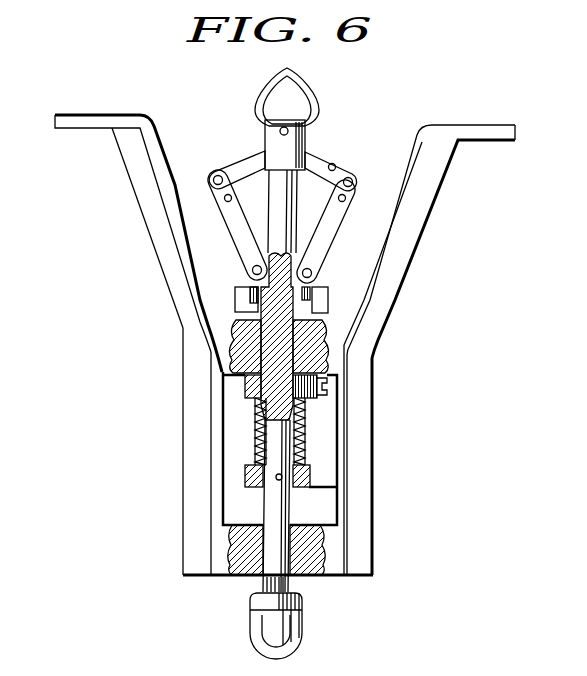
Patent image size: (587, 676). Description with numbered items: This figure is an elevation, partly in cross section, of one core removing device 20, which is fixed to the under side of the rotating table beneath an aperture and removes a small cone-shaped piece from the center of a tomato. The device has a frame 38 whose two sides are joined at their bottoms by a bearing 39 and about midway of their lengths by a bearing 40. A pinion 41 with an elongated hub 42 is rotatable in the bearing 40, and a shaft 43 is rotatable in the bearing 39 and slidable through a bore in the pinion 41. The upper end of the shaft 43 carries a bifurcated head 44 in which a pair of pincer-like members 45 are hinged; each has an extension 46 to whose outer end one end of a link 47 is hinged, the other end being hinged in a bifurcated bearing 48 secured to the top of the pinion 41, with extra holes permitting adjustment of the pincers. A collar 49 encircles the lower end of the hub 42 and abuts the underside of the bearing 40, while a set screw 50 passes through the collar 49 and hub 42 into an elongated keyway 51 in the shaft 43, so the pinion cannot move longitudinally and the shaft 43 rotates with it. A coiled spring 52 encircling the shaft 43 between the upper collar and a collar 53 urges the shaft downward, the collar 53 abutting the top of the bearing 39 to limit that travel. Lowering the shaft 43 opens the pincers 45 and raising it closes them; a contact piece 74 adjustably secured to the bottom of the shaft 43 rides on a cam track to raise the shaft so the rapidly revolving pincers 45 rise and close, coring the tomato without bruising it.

The core removing device 20 is at (118, 318).
The frame 38 is at (408, 233).
The bearing 39 is at (312, 560).
The bearing 40 is at (318, 350).
The pinion 41 is at (238, 299).
The elongated hub 42 is at (262, 345).
The shaft 43 is at (272, 500).
The bifurcated head 44 is at (325, 156).
The pincer-like members 45 is at (273, 93).
The extensions 46 is at (256, 160).
The link 47 is at (227, 201).
The bifurcated bearing 48 is at (249, 269).
The collar 49 is at (246, 392).
The set screw 50 is at (335, 400).
The elongated keyway 51 is at (332, 372).
The coiled spring 52 is at (305, 453).
The collar 53 is at (305, 499).
The contact piece 74 is at (281, 626).